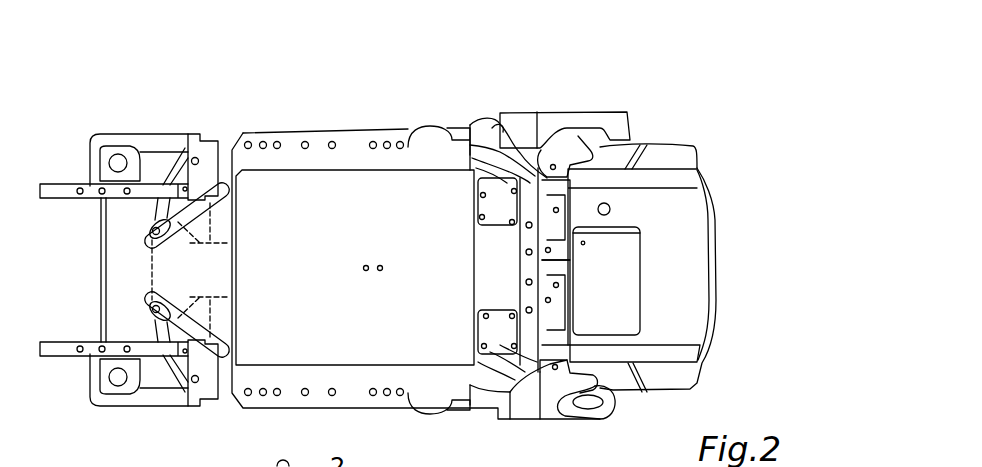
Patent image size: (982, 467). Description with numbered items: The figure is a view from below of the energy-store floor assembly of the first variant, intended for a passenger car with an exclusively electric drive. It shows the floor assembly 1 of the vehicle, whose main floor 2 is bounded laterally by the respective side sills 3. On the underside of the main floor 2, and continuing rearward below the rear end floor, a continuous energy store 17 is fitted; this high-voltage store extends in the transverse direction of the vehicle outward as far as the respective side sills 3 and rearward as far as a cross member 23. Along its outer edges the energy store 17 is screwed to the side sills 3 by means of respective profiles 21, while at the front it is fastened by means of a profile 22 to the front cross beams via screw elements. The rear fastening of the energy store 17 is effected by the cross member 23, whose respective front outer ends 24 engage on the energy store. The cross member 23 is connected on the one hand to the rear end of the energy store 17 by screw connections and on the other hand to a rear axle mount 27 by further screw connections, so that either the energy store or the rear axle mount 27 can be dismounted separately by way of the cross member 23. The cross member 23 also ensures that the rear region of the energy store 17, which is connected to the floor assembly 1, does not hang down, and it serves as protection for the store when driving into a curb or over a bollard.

The floor assembly 1 is at (713, 82).
The main floor 2 is at (337, 117).
The side sills 3 is at (268, 168).
The energy store 17 is at (453, 273).
The profiles 21 is at (362, 152).
The profile 22 is at (275, 198).
The cross member 23 is at (560, 265).
The front outer ends 24 is at (525, 150).
The rear axle mount 27 is at (560, 232).